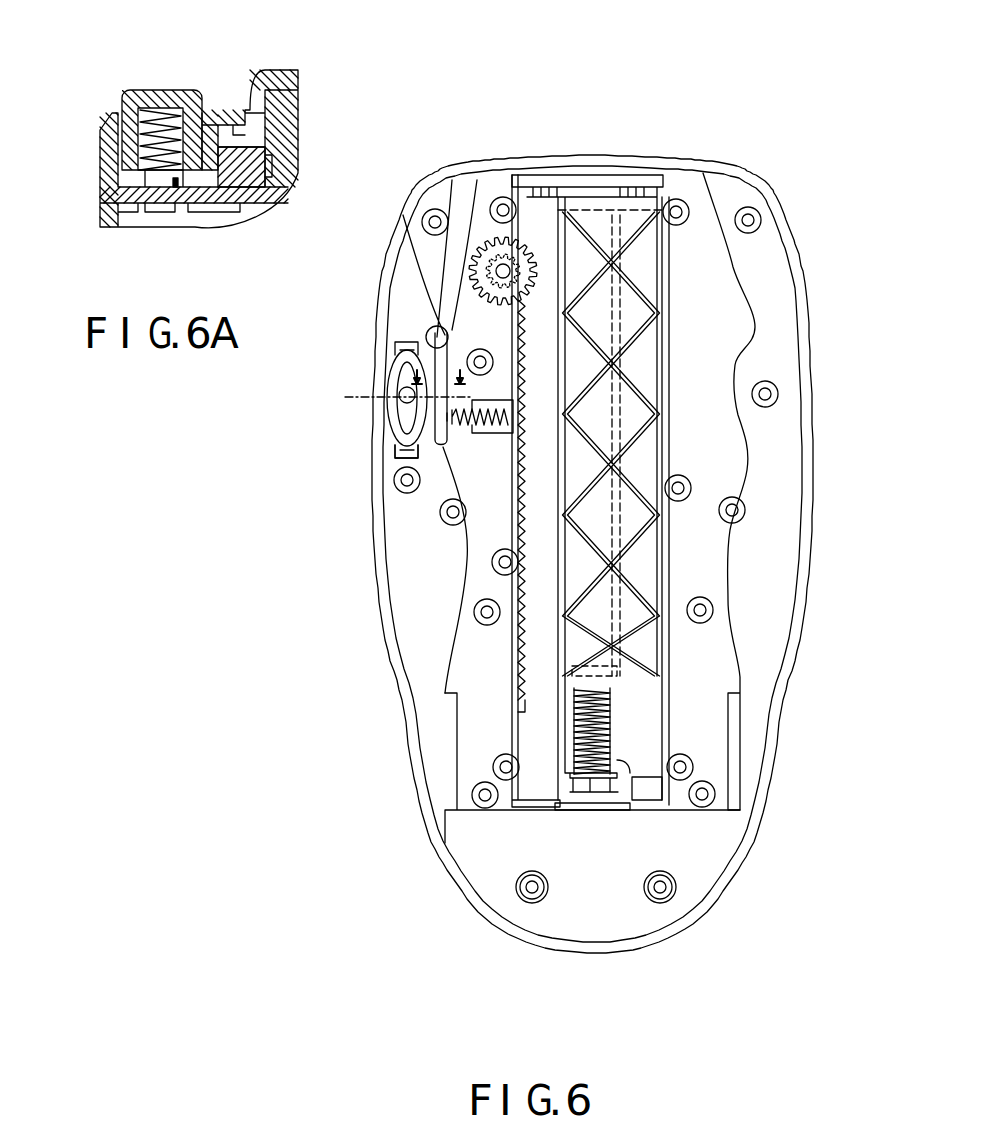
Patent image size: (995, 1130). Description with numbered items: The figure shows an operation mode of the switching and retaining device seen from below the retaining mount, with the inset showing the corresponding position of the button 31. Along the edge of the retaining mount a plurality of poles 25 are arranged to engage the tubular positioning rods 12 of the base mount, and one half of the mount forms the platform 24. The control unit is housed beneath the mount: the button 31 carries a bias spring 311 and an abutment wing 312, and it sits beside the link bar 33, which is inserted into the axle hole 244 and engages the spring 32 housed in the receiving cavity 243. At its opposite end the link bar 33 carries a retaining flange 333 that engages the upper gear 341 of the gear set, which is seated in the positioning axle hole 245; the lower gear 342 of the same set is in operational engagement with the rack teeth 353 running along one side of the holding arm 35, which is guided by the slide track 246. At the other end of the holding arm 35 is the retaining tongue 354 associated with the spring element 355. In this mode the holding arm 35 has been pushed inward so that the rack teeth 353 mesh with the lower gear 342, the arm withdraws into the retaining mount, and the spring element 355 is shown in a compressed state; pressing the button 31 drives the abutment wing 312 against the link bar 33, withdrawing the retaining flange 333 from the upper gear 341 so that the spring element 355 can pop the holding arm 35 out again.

In FIG. 6, the tubular positioning rods 12 is at (762, 217).
In FIG. 6, the platform 24 is at (675, 187).
In FIG. 6, the poles 25 is at (752, 217).
In FIG. 6A, the button 31 is at (145, 88).
In FIG. 6, the button 31 is at (395, 425).
In FIG. 6A, the bias spring 311 is at (140, 150).
In FIG. 6, the bias spring 311 is at (400, 400).
In FIG. 6A, the abutment wing 312 is at (247, 140).
In FIG. 6, the abutment wing 312 is at (410, 452).
In FIG. 6, the spring 32 is at (507, 430).
In FIG. 6A, the link bar 33 is at (232, 180).
In FIG. 6, the link bar 33 is at (456, 283).
In FIG. 6, the retaining flange 333 is at (473, 278).
In FIG. 6, the upper gear 341 is at (537, 257).
In FIG. 6, the lower gear 342 is at (505, 264).
In FIG. 6, the receiving cavity 243 is at (497, 427).
In FIG. 6, the axle hole 244 is at (430, 326).
In FIG. 6, the positioning axle hole 245 is at (492, 257).
In FIG. 6, the slide track 246 is at (537, 807).
In FIG. 6, the holding arm 35 is at (533, 705).
In FIG. 6, the rack teeth 353 is at (520, 645).
In FIG. 6, the retaining tongue 354 is at (613, 758).
In FIG. 6, the spring element 355 is at (613, 733).